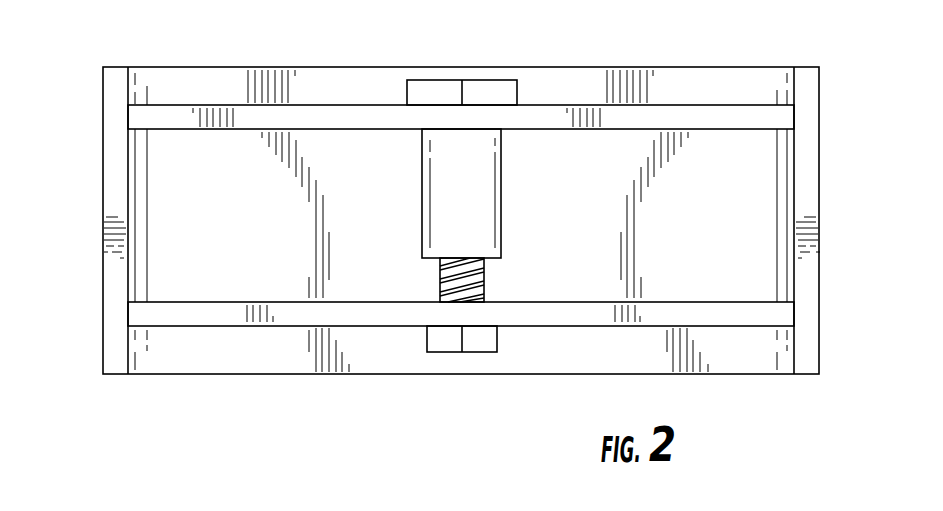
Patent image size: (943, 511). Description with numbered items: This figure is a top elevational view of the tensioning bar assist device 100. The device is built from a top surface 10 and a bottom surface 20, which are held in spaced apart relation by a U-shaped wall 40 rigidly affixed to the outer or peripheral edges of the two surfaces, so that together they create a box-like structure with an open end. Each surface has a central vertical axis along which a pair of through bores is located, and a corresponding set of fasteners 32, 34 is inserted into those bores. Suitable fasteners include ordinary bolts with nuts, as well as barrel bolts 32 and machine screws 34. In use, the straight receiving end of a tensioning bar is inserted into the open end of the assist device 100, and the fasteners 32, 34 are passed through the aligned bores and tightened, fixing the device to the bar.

The top surface 10 is at (678, 105).
The bottom surface 20 is at (723, 326).
The fastener 32 is at (485, 80).
The fastener 34 is at (475, 345).
The U-shaped wall 40 is at (103, 200).
The tensioning bar assist device 100 is at (110, 400).